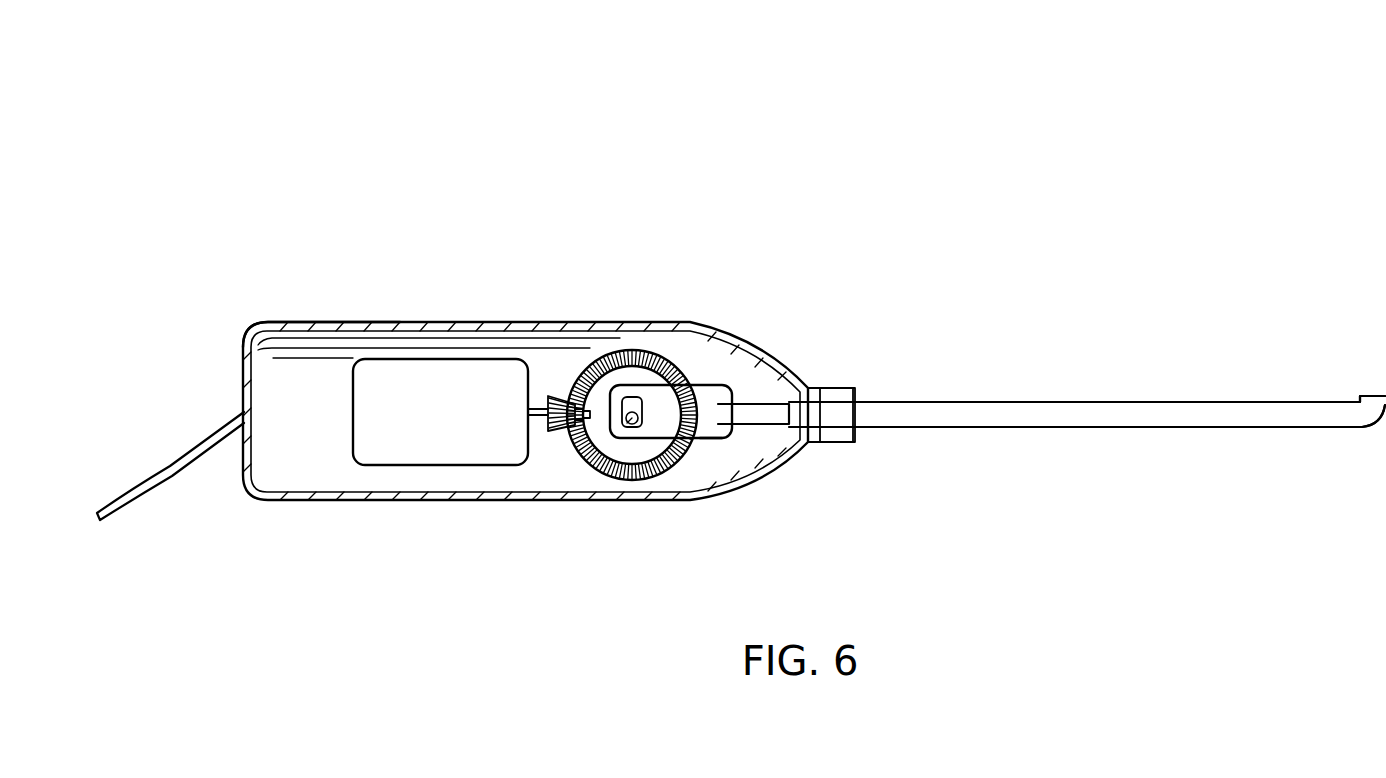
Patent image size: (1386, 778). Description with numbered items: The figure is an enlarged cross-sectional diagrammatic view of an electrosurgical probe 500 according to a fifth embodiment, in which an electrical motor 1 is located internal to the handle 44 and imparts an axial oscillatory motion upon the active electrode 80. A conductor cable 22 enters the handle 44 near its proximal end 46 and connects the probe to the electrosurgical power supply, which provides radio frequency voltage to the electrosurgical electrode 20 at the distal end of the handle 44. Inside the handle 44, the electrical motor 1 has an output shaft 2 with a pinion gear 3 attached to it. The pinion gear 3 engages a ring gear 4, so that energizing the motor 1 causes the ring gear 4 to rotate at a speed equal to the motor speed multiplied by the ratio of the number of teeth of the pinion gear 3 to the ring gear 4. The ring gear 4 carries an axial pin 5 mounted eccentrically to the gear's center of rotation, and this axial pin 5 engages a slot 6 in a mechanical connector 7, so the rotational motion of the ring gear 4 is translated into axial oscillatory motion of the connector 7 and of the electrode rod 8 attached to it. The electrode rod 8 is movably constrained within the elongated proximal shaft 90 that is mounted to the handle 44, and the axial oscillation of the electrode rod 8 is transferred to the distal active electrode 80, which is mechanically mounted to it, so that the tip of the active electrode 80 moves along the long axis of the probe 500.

The electrosurgical probe 500 is at (1048, 120).
The electrosurgical electrode 20 is at (1154, 341).
The elongated proximal shaft 90 is at (1010, 401).
The distal active electrode 80 is at (1368, 395).
The handle 44 is at (452, 488).
The proximal end of handle 46 is at (243, 360).
The conductor cable 22 is at (150, 478).
The electrical motor 1 is at (428, 375).
The output shaft 2 is at (548, 398).
The pinion gear 3 is at (556, 400).
The ring gear 4 is at (636, 396).
The slot 6 is at (641, 388).
The axial pin 5 is at (634, 430).
The mechanical connector 7 is at (716, 440).
The electrode rod 8 is at (758, 404).